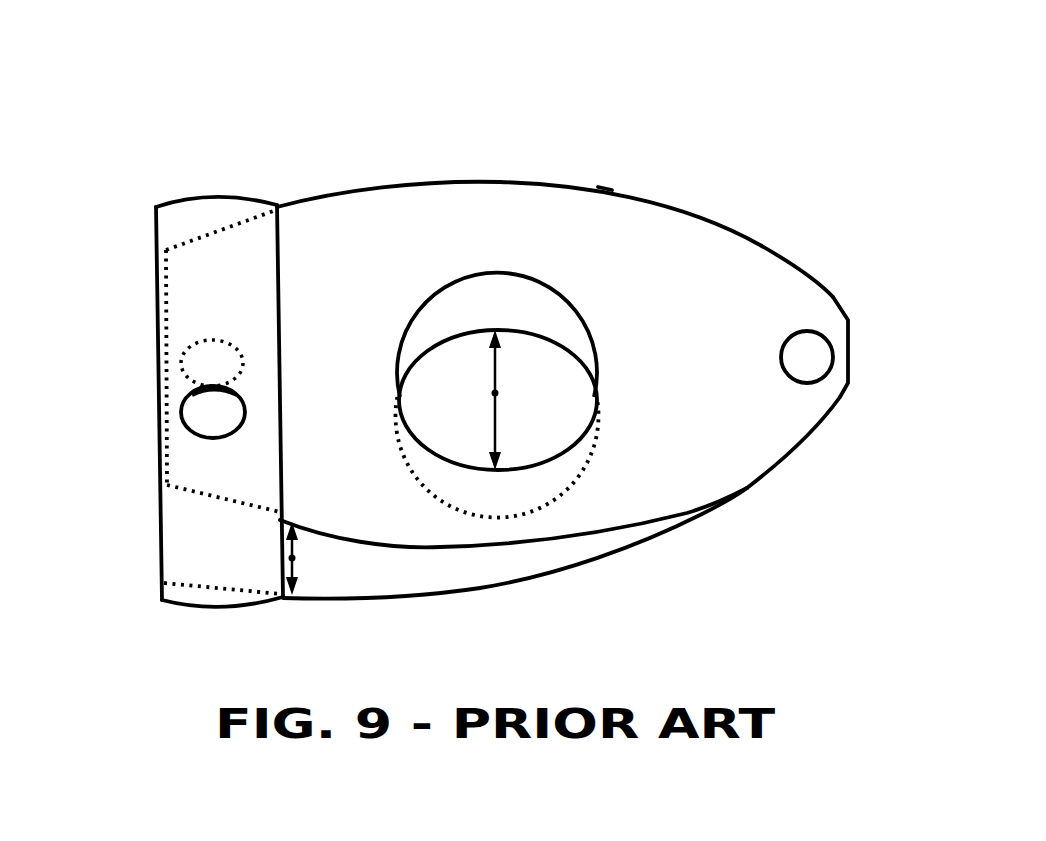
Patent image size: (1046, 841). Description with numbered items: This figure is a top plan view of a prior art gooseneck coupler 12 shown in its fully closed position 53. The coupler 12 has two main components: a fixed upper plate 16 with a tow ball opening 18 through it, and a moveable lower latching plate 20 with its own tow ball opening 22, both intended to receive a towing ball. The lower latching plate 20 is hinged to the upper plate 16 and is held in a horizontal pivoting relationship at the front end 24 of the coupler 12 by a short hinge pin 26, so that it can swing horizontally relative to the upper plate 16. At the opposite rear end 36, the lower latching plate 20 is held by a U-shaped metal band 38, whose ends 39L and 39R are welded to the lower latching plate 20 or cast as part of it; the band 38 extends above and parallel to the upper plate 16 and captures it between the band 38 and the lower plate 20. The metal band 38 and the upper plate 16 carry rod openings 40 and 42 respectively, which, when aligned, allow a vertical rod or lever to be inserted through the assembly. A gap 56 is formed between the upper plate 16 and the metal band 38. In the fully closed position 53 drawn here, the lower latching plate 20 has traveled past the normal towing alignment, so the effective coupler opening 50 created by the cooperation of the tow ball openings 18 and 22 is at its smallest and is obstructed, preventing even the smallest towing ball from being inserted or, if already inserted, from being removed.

The gooseneck coupler 12 is at (612, 353).
The fixed upper plate 16 is at (672, 495).
The tow ball opening 18 is at (443, 258).
The lower latching plate 20 is at (528, 568).
The tow ball opening 22 is at (517, 300).
The front end 24 is at (850, 353).
The hinge pin 26 is at (813, 347).
The rear end 36 is at (177, 402).
The metal band 38 is at (173, 205).
The end of metal band 39L is at (237, 200).
The end of metal band 39R is at (217, 610).
The rod opening 40 is at (193, 430).
The rod opening 42 is at (195, 348).
The effective coupler opening 50 is at (495, 393).
The fully closed position 53 is at (607, 188).
The gap 56 is at (292, 558).